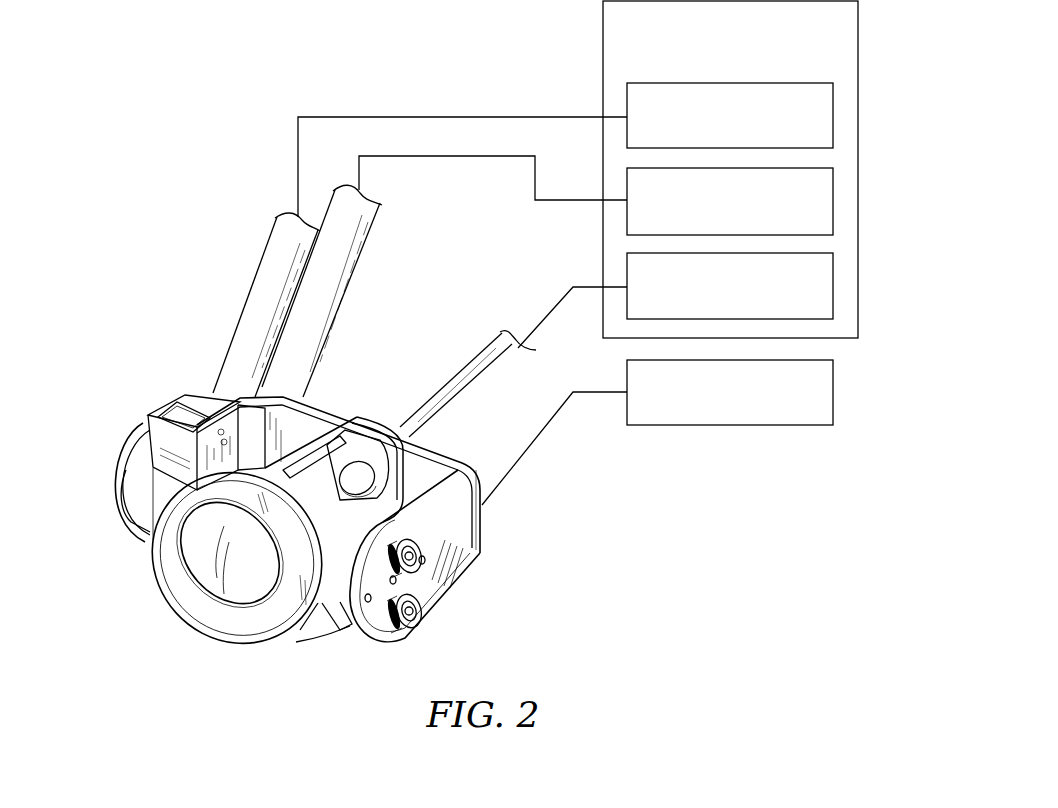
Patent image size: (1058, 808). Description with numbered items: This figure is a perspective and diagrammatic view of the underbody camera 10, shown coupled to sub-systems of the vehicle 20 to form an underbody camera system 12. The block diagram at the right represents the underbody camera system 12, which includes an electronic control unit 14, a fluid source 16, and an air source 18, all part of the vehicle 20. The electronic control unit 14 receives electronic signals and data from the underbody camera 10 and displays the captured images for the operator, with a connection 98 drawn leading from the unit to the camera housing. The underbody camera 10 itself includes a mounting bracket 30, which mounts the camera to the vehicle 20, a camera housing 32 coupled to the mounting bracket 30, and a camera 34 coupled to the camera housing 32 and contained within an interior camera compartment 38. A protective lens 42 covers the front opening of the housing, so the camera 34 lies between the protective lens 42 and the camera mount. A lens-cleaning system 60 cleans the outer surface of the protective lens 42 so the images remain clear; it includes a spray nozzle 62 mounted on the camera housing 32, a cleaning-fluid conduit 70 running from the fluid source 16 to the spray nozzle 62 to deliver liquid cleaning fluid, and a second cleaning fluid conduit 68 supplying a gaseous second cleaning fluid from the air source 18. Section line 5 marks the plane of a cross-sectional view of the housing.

The underbody camera 10 is at (152, 142).
The underbody camera system 12 is at (858, 32).
The electronic control unit 14 is at (833, 287).
The fluid source 16 is at (833, 200).
The air source 18 is at (833, 113).
The vehicle 20 is at (833, 392).
The mounting bracket 30 is at (492, 551).
The camera housing 32 is at (305, 643).
The camera 34 is at (249, 580).
The interior camera compartment 38 is at (201, 545).
The protective lens 42 is at (221, 580).
The section line 5 is at (432, 378).
The lens-cleaning system 60 is at (181, 242).
The spray nozzle 62 is at (171, 410).
The second cleaning fluid conduit 68 is at (252, 233).
The cleaning-fluid conduit 70 is at (364, 257).
The cable 98 is at (466, 356).